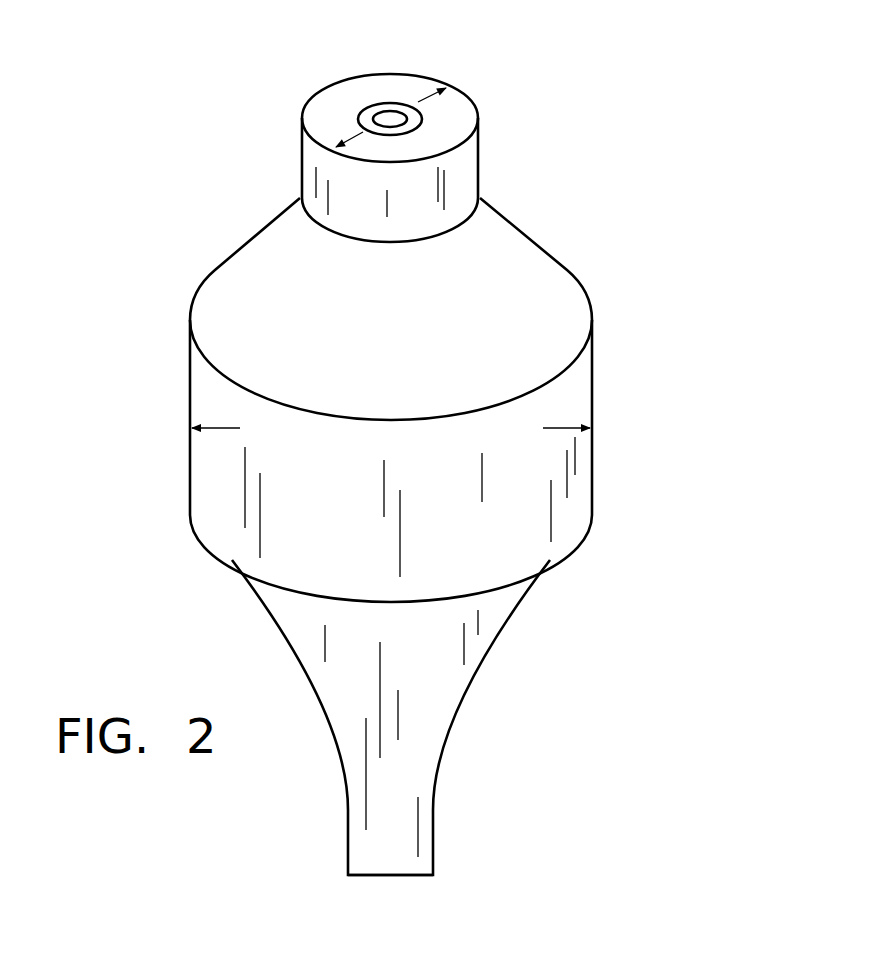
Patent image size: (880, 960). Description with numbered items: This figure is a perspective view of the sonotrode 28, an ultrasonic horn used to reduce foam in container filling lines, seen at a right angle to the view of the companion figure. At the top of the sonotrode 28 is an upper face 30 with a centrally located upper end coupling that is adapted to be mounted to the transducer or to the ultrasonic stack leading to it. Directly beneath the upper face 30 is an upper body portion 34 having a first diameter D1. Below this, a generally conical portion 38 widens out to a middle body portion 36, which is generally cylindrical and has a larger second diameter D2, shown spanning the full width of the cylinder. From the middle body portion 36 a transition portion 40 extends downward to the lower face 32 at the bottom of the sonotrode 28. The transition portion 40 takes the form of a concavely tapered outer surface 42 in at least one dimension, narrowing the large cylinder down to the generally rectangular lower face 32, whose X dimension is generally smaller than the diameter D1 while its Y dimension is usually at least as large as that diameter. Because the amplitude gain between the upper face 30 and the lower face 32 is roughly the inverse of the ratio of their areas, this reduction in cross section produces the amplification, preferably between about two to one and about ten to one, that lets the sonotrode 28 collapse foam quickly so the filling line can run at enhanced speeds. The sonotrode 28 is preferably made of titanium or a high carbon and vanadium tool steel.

The sonotrode 28 is at (600, 226).
The upper face 30 is at (325, 99).
The lower face 32 is at (394, 880).
The upper body portion 34 is at (468, 173).
The middle body portion 36 is at (222, 453).
The generally conical portion 38 is at (257, 278).
The transition portion 40 is at (318, 633).
The concavely tapered outer surface 42 is at (468, 687).
The first diameter D1 is at (418, 102).
The second diameter D2 is at (548, 423).